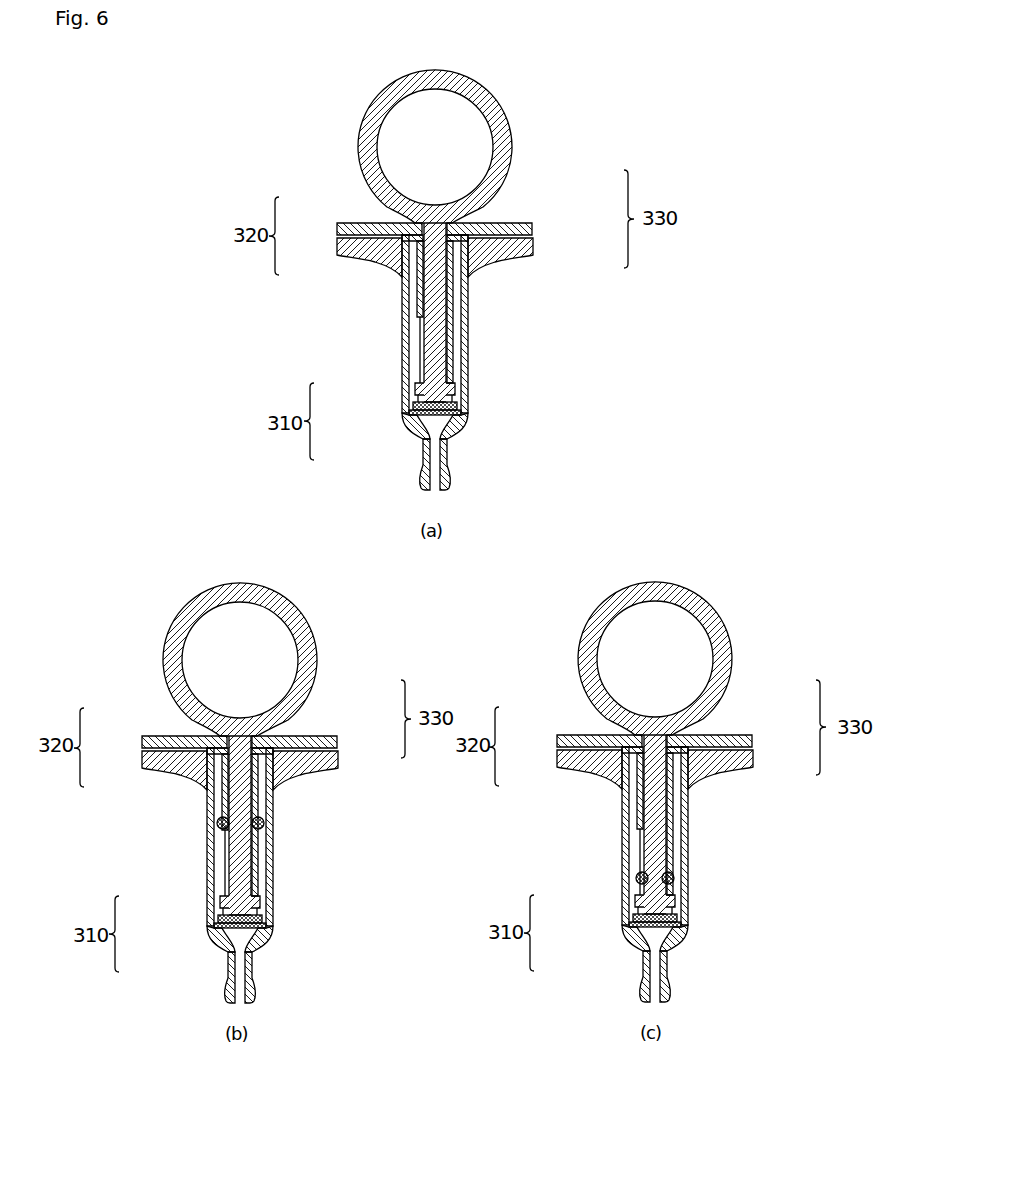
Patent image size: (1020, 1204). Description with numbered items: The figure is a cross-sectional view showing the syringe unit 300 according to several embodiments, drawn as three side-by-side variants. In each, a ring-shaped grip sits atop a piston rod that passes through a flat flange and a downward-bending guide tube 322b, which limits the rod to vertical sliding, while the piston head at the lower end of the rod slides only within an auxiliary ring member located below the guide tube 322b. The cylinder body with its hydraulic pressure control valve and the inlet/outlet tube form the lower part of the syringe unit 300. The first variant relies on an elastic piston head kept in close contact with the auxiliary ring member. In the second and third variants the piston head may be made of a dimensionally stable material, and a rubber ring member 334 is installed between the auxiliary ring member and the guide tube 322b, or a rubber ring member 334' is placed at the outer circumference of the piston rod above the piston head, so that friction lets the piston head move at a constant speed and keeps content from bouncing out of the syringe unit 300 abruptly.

The syringe unit 300 is at (592, 98).
The guide tube 322b is at (213, 762).
The rubber ring member 334 is at (188, 840).
The rubber ring member 334' is at (606, 862).